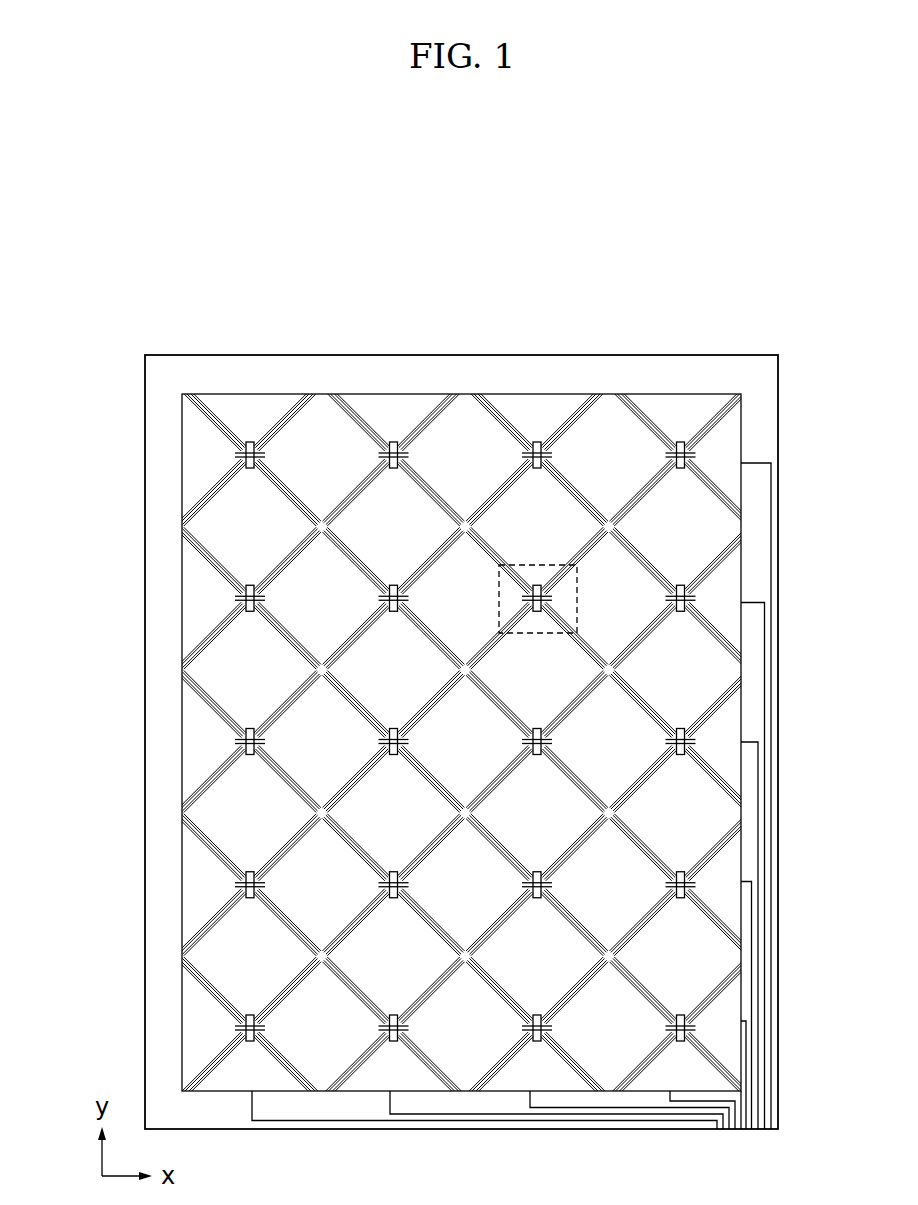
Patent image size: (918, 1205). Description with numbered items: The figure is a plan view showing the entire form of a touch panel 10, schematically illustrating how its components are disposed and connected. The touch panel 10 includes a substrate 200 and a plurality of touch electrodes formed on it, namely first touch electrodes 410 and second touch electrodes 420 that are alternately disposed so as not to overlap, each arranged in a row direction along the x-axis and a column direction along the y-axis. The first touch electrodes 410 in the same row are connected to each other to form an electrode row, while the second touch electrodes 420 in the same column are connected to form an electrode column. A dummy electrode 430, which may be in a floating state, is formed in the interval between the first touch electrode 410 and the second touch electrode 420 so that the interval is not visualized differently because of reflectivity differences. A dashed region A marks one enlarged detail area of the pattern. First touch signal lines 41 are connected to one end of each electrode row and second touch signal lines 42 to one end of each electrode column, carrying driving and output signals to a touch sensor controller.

The touch panel 10 is at (466, 212).
The substrate 200 is at (669, 355).
The first touch electrode 410 is at (487, 418).
The second touch electrode 420 is at (422, 418).
The dummy electrode 430 is at (356, 418).
The region A is at (547, 565).
The first touch signal line 41 is at (766, 614).
The second touch signal line 42 is at (325, 1121).